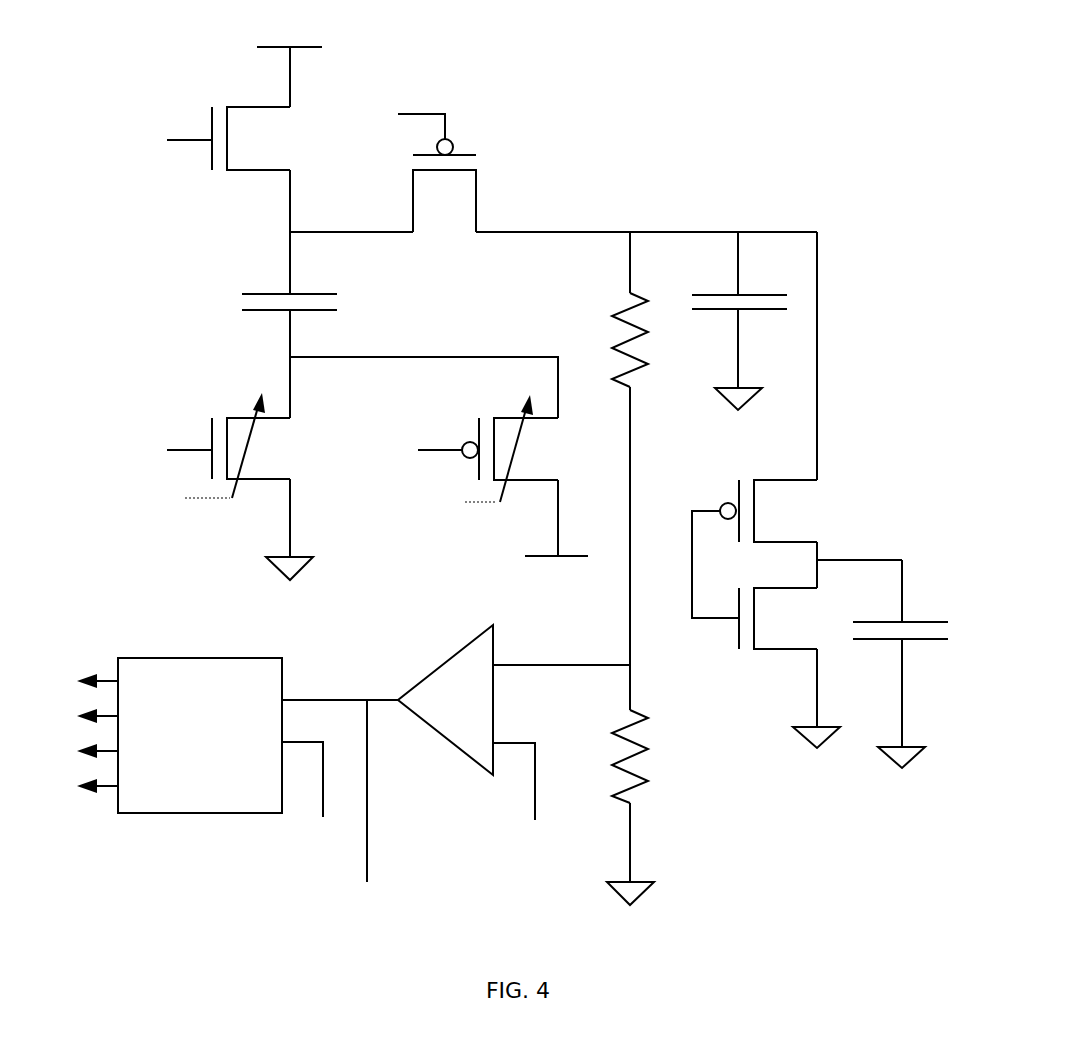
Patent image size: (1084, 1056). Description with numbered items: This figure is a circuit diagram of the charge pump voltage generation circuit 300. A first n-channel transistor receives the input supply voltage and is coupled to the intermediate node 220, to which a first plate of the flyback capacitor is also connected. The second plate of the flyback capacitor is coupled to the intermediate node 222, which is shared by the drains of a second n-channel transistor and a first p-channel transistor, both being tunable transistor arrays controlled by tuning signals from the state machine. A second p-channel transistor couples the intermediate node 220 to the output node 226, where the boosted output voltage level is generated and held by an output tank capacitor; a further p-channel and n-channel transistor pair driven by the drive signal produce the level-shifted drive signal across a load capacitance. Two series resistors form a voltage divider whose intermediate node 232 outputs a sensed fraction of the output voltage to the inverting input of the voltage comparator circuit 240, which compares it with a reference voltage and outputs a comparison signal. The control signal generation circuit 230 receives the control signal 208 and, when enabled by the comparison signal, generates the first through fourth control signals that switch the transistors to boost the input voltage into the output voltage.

The charge pump voltage generation circuit 300 is at (605, 93).
The intermediate node 220 is at (326, 232).
The intermediate node 222 is at (398, 382).
The output node 226 is at (823, 342).
The intermediate node 232 is at (588, 664).
The voltage comparator circuit 240 is at (438, 735).
The control signal generation circuit 230 is at (230, 813).
The control signal 208 is at (312, 798).